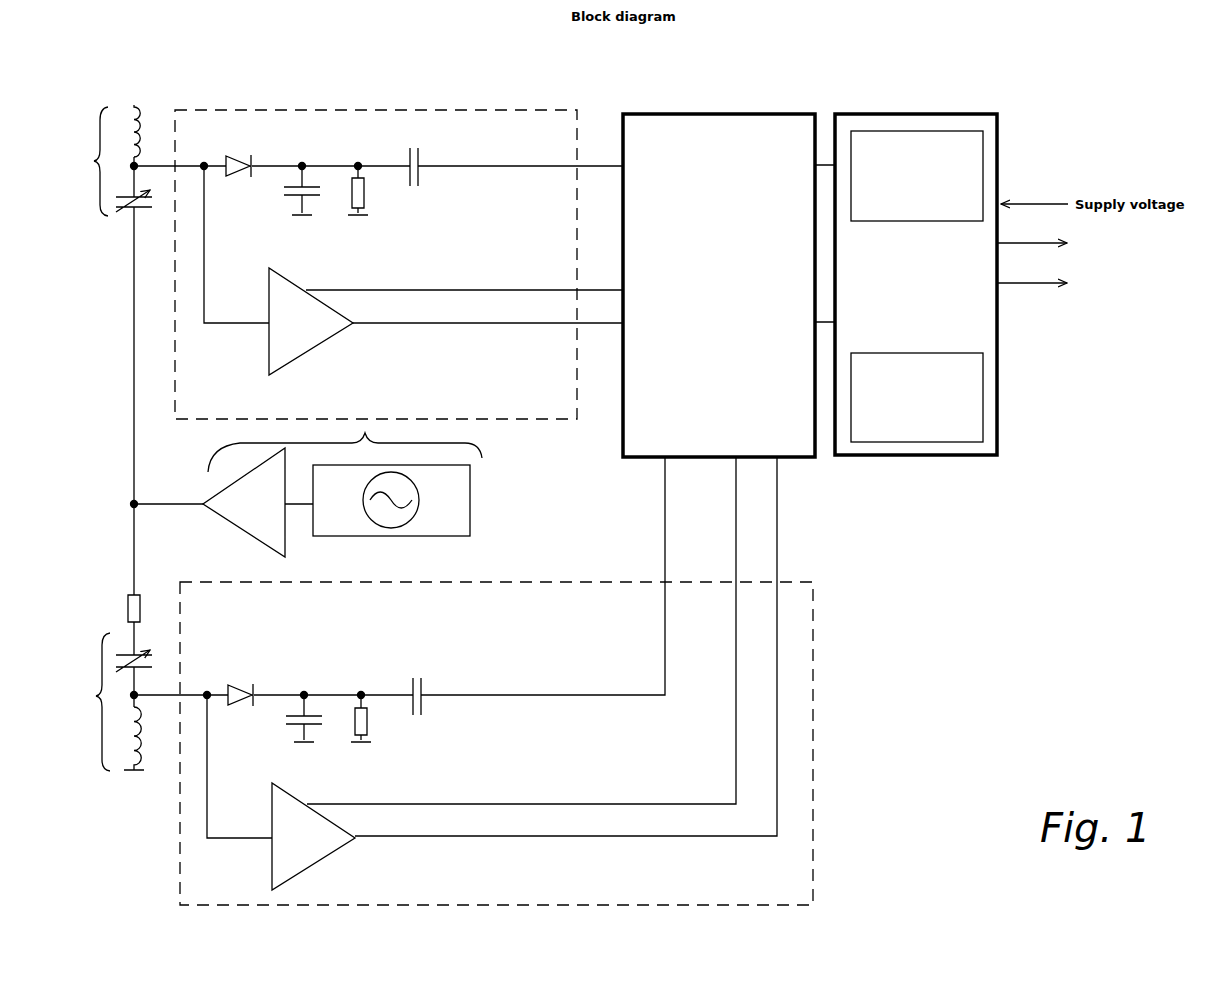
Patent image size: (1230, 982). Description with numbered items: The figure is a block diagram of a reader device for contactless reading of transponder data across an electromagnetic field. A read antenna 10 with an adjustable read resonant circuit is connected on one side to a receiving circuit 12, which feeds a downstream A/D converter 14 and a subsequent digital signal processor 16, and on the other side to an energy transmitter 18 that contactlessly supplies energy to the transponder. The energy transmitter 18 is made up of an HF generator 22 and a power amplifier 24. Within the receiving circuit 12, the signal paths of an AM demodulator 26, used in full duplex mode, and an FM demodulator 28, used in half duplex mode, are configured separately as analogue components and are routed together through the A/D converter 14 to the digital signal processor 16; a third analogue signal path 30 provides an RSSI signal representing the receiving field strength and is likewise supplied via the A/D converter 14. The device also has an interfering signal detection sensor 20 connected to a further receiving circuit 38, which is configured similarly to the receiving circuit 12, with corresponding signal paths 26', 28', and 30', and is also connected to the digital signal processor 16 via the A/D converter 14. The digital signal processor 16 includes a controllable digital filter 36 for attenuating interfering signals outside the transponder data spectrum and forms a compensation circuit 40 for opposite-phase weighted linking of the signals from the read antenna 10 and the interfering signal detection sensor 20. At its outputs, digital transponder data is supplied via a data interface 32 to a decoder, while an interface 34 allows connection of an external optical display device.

The read antenna 10 is at (111, 143).
The receiving circuit 12 is at (350, 106).
The A/D converter 14 is at (715, 108).
The digital signal processor 16 is at (905, 108).
The energy transmitter 18 is at (345, 445).
The interfering signal detection sensor 20 is at (106, 699).
The HF generator 22 is at (472, 495).
The power amplifier 24 is at (232, 526).
The AM demodulator 26 is at (473, 181).
The FM demodulator 28 is at (488, 342).
The third analogue signal path 30 is at (464, 263).
The AM signal path of additional receiving circuit 26' is at (476, 712).
The FM signal path of additional receiving circuit 28' is at (566, 675).
The RSSI signal path of additional receiving circuit 30' is at (521, 630).
The data interface 32 is at (1014, 246).
The interface 34 is at (1010, 288).
The controllable digital filter 36 is at (975, 148).
The receiving circuit 38 is at (816, 662).
The compensation circuit 40 is at (965, 442).